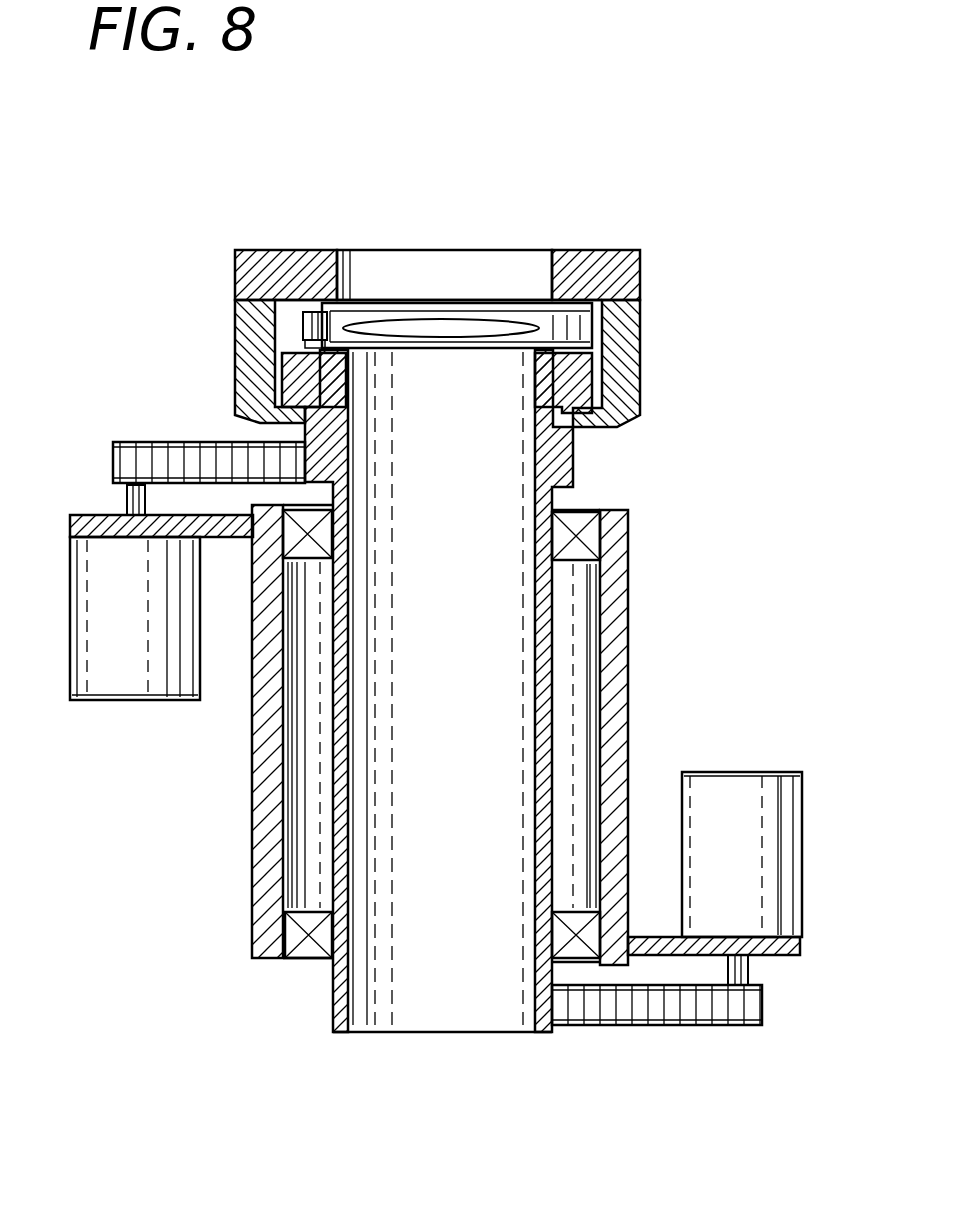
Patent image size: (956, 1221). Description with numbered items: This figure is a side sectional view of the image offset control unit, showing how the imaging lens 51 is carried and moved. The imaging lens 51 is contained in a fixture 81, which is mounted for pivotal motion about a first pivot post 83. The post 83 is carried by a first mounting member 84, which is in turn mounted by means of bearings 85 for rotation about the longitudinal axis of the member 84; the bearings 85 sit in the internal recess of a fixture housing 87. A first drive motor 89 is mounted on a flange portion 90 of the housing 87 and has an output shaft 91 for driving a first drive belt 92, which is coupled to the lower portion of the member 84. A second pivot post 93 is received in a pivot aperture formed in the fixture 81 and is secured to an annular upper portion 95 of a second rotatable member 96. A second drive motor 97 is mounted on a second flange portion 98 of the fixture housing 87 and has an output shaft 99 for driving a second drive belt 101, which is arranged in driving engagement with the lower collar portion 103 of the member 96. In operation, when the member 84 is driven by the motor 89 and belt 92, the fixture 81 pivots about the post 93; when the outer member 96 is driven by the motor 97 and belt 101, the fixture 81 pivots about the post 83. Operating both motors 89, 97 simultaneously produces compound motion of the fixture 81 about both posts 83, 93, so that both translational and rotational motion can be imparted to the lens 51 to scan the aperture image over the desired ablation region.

The imaging lens 51 is at (511, 253).
The fixture 81 is at (591, 250).
The first pivot post 83 is at (572, 303).
The first mounting member 84 is at (582, 385).
The bearings 85 is at (595, 537).
The fixture housing 87 is at (622, 640).
The first drive motor 89 is at (745, 790).
The flange portion 90 is at (785, 950).
The output shaft 91 is at (748, 970).
The first drive belt 92 is at (765, 1002).
The second pivot post 93 is at (318, 315).
The annular upper portion 95 is at (248, 267).
The second rotatable member 96 is at (240, 340).
The second drive motor 97 is at (115, 660).
The second flange portion 98 is at (100, 528).
The output shaft 99 is at (127, 500).
The second drive belt 101 is at (160, 445).
The lower collar portion 103 is at (573, 470).